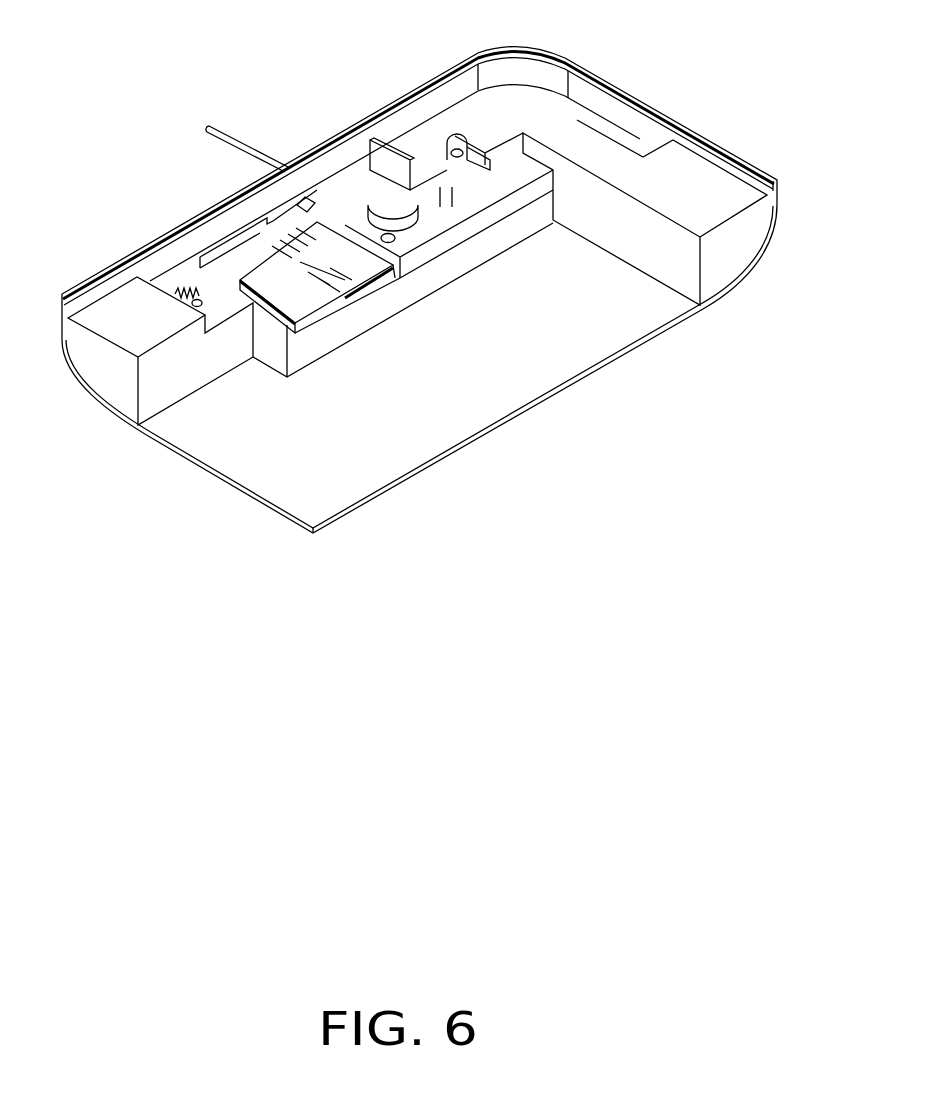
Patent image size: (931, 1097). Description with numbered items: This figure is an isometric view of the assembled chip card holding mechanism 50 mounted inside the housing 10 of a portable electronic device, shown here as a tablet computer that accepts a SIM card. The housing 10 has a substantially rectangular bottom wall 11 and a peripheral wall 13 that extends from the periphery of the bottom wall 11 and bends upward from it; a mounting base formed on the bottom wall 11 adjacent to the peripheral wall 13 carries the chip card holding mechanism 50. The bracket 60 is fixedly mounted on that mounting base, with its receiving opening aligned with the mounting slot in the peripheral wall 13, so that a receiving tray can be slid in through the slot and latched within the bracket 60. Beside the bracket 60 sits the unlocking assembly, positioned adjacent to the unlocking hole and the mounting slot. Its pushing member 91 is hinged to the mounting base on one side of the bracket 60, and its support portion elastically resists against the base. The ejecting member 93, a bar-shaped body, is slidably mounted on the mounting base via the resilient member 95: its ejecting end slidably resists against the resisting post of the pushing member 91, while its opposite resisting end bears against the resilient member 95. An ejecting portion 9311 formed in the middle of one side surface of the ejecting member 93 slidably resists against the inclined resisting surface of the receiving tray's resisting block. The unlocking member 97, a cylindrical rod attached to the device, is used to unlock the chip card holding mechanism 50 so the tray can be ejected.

The housing 10 is at (663, 93).
The bottom wall 11 is at (567, 340).
The peripheral wall 13 is at (450, 95).
The chip card holding mechanism 50 is at (347, 125).
The bracket 60 is at (308, 297).
The pushing member 91 is at (423, 190).
The ejecting member 93 is at (237, 263).
The ejecting portion 9311 is at (270, 215).
The resilient member 95 is at (180, 287).
The unlocking member 97 is at (219, 128).